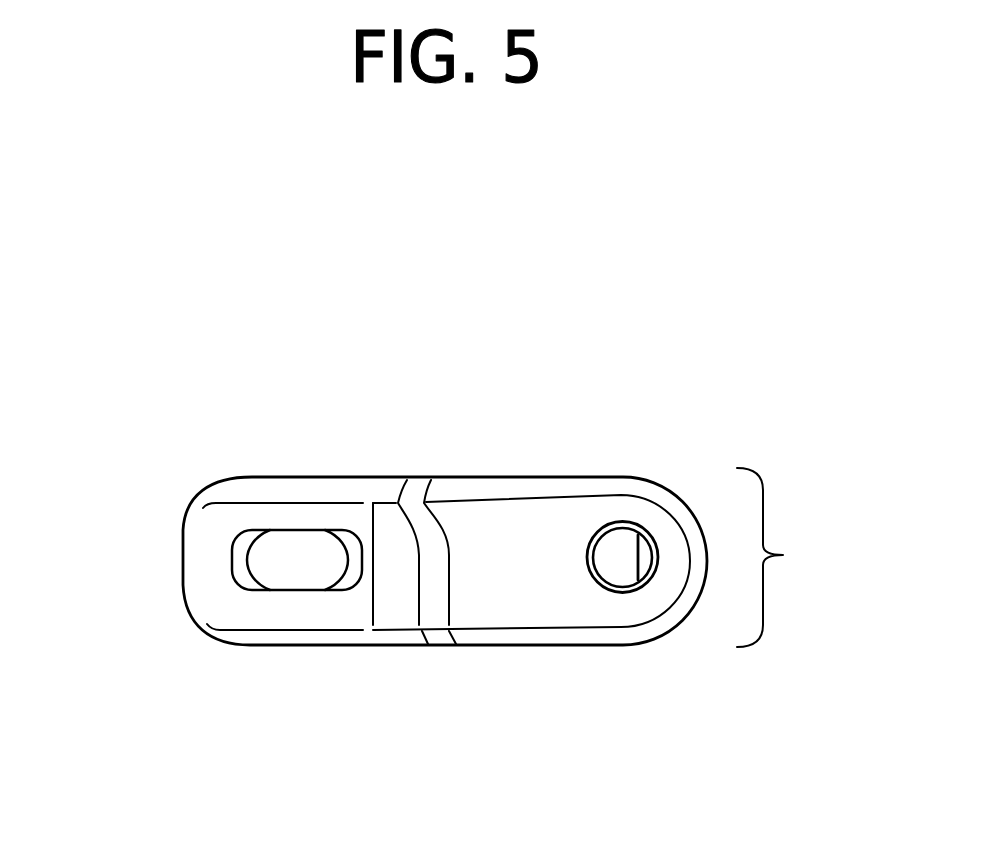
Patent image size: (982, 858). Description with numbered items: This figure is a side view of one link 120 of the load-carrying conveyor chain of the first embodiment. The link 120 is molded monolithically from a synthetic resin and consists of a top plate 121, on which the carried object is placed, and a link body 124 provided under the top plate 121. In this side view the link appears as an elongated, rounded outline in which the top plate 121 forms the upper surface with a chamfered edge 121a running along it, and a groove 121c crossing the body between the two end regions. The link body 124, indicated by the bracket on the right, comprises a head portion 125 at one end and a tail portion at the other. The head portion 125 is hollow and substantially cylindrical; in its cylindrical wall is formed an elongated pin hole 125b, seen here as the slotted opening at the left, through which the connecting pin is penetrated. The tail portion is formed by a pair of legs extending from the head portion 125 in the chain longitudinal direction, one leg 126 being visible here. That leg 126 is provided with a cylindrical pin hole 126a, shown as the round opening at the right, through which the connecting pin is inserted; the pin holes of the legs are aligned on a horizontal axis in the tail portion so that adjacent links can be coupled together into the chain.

The link 120 is at (433, 460).
The top plate 121 is at (318, 478).
The chamfered edge of plate body 121a is at (543, 488).
The groove of plate body 121c is at (432, 591).
The link body 124 is at (787, 557).
The head portion 125 is at (198, 562).
The elongated pin hole 125b is at (285, 590).
The leg 126 is at (641, 506).
The pin hole 126a is at (595, 567).